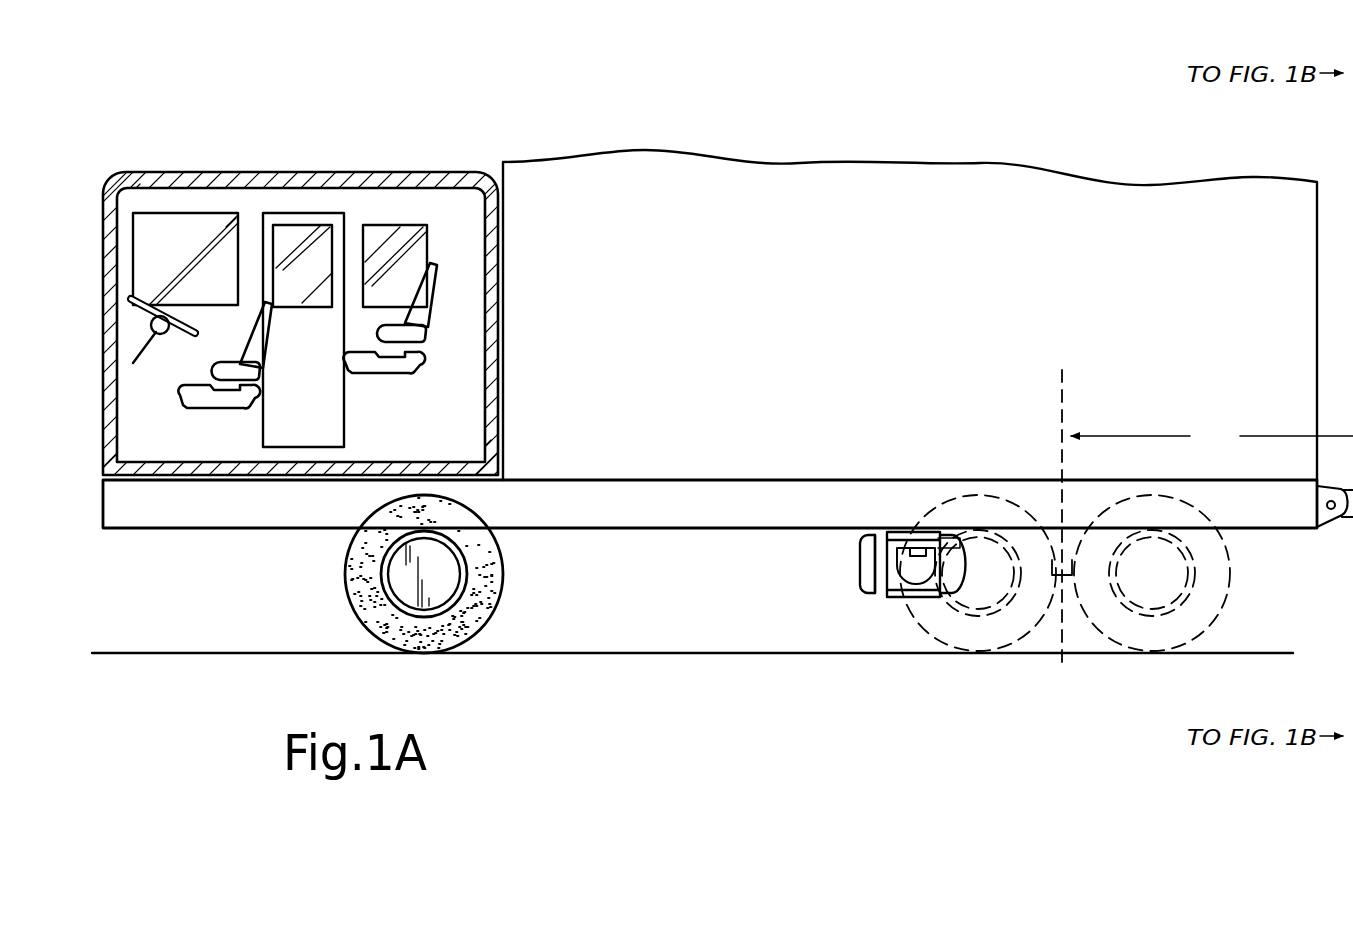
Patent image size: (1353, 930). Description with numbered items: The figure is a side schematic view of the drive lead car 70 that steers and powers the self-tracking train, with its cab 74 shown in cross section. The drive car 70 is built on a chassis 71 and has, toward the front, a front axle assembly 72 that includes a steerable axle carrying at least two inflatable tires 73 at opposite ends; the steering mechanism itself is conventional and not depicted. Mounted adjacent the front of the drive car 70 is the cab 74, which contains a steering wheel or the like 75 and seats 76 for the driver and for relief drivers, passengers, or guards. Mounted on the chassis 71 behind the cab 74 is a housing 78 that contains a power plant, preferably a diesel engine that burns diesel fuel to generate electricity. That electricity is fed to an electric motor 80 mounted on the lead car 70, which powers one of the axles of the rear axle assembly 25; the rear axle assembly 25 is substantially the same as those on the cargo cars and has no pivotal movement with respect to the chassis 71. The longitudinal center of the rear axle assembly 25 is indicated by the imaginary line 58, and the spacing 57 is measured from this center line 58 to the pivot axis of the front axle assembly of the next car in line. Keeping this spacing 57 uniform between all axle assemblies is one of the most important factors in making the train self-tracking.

The drive lead car 70 is at (512, 120).
The chassis 71 is at (673, 510).
The front axle assembly 72 is at (522, 575).
The inflatable tires 73 is at (347, 592).
The cab 74 is at (267, 173).
The steering wheel 75 is at (140, 312).
The seats 76 is at (230, 334).
The housing 78 is at (1191, 205).
The electric motor 80 is at (866, 563).
The rear axle assembly 25 is at (1238, 580).
The spacing 57 is at (1212, 438).
The longitudinal center line 58 is at (1060, 437).